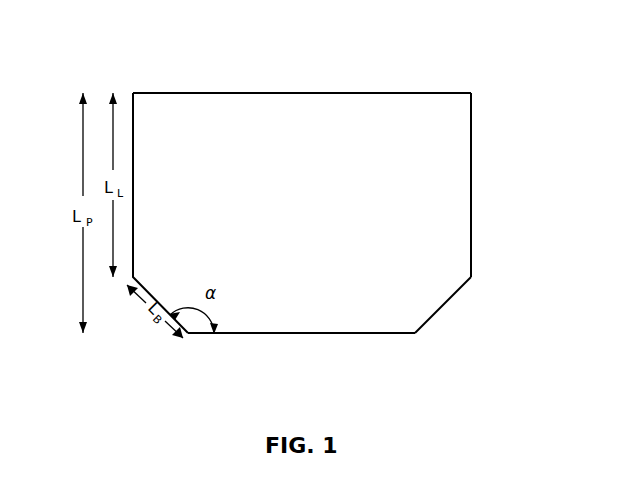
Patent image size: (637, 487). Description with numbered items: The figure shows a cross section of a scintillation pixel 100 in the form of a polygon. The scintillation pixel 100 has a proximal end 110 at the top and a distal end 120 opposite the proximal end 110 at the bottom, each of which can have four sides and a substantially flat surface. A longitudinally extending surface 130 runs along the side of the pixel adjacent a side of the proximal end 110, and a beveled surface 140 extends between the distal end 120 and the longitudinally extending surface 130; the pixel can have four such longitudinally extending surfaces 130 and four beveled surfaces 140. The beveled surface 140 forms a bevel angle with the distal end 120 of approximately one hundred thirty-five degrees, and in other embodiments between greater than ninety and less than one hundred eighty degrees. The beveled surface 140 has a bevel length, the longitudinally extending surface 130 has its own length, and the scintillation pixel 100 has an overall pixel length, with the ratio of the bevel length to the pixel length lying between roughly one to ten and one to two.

The scintillation pixel 100 is at (51, 60).
The proximal end 110 is at (341, 93).
The distal end 120 is at (340, 333).
The longitudinally extending surface 130 is at (471, 133).
The beveled surface 140 is at (440, 307).